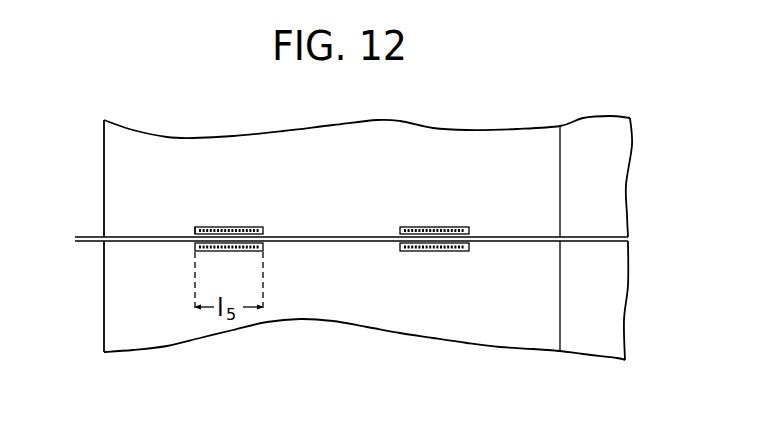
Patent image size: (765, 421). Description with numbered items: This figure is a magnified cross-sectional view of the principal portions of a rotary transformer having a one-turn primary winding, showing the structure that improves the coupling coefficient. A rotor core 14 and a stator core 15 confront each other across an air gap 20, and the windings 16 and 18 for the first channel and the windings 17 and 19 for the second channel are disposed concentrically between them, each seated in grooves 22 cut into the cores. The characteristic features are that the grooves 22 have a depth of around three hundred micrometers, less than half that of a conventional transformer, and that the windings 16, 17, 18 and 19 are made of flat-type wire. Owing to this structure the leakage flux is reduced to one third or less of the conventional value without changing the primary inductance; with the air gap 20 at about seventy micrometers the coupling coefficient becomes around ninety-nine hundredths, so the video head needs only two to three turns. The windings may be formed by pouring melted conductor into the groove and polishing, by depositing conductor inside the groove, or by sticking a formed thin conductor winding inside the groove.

The rotor core 14 is at (104, 156).
The stator core 15 is at (170, 338).
The winding 16 is at (437, 226).
The winding 17 is at (237, 226).
The winding 18 is at (251, 252).
The winding 19 is at (433, 251).
The air gap 20 is at (81, 258).
The grooves 22 is at (196, 230).